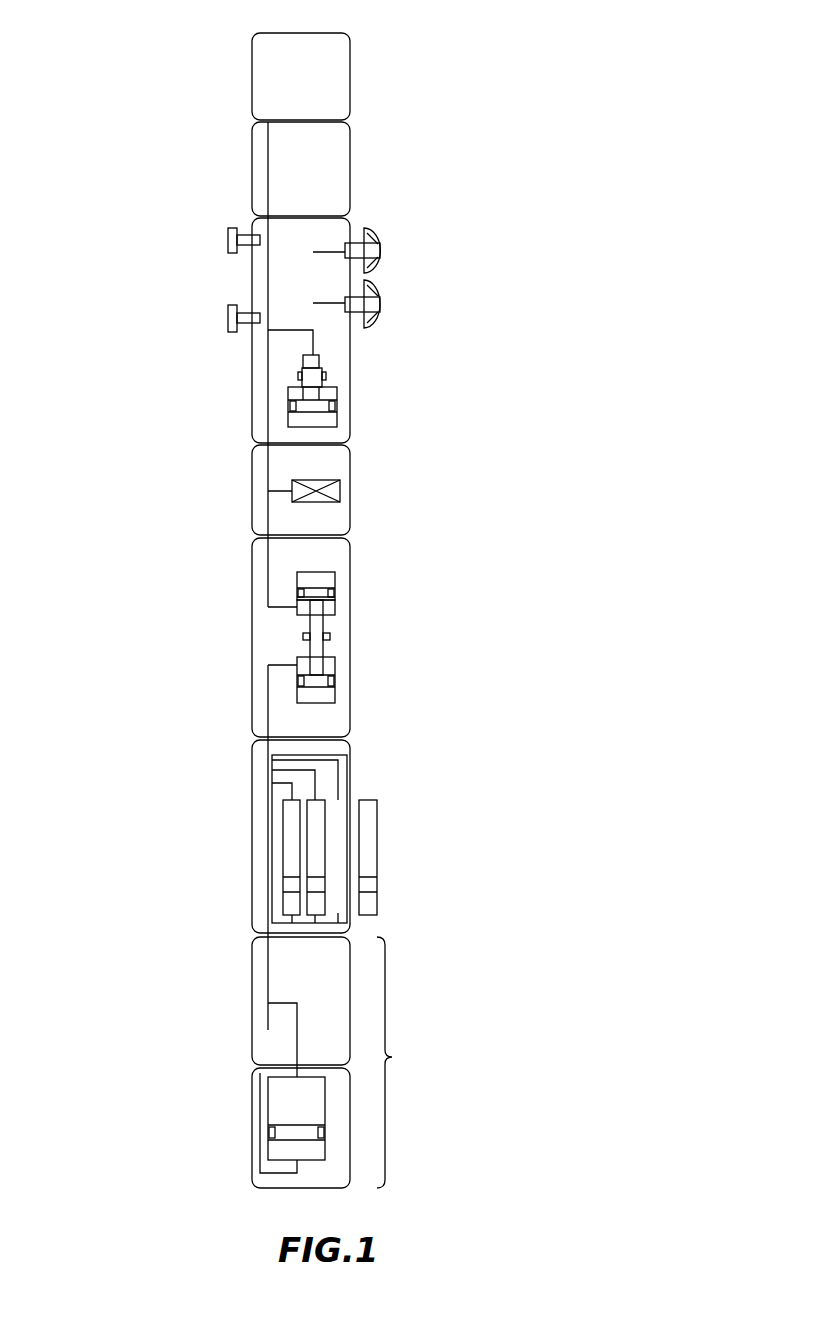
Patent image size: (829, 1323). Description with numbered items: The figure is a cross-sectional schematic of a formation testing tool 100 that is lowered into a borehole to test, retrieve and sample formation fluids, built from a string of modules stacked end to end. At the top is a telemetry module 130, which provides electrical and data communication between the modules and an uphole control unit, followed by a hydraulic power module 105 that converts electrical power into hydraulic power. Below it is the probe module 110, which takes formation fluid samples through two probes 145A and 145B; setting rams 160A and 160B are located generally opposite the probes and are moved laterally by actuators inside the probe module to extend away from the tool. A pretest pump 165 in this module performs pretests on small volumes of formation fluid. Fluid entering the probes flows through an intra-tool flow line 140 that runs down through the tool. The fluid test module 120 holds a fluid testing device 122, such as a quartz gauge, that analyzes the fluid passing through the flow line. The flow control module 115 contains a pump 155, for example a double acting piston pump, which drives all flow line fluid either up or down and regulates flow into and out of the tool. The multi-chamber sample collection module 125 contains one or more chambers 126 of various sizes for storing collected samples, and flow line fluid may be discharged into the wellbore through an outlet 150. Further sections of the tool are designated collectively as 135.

The testing tool 100 is at (148, 73).
The telemetry module 130 is at (352, 80).
The hydraulic power module 105 is at (352, 152).
The probe module 110 is at (352, 345).
The flow line 140 is at (262, 376).
The setting ram 160A is at (228, 241).
The setting ram 160B is at (228, 317).
The probe 145A is at (385, 243).
The probe 145B is at (385, 298).
The pretest pump 165 is at (337, 405).
The fluid test module 120 is at (353, 475).
The fluid testing device 122 is at (292, 487).
The flow control module 115 is at (352, 640).
The pump 155 is at (297, 635).
The multi-chamber sample collection module 125 is at (353, 758).
The collection chamber 126 is at (377, 823).
The other sections 135 is at (392, 1057).
The outlet 150 is at (268, 1030).